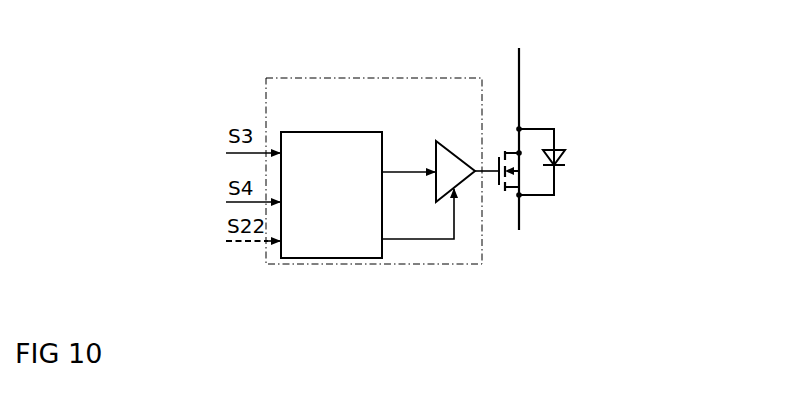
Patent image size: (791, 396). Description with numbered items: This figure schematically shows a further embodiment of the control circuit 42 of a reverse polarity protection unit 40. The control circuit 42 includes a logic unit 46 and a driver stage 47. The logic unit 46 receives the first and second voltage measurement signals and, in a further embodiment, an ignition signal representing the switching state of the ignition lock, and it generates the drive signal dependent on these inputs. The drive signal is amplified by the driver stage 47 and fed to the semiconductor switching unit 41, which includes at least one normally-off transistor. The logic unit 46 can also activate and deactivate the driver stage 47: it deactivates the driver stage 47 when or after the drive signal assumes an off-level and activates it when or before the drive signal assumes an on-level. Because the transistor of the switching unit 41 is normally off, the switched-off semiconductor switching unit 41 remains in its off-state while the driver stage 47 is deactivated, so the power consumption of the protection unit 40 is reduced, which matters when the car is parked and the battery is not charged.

The protection unit 40 is at (552, 85).
The semiconductor switching unit 41 is at (504, 156).
The control circuit 42 is at (360, 77).
The logic unit 46 is at (335, 131).
The driver stage 47 is at (448, 139).